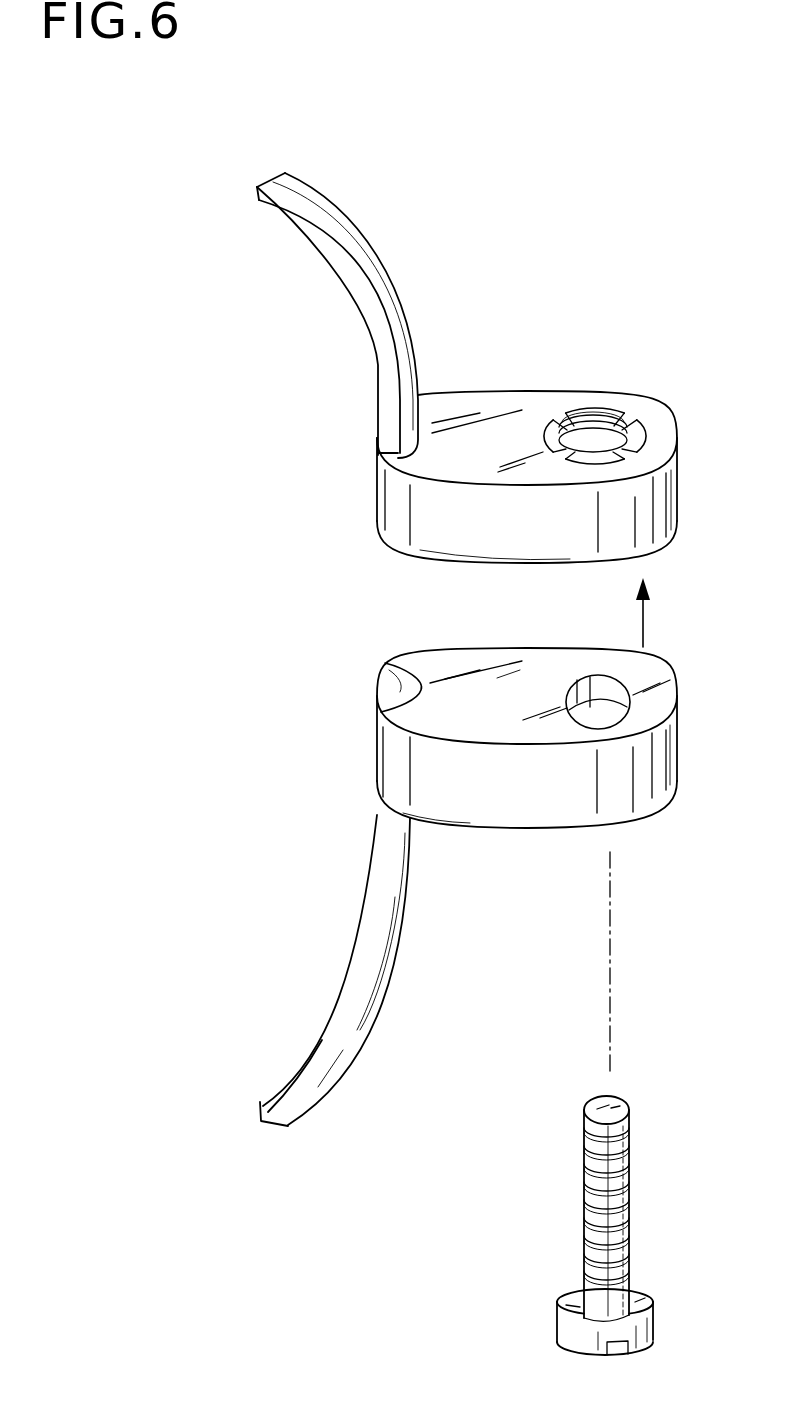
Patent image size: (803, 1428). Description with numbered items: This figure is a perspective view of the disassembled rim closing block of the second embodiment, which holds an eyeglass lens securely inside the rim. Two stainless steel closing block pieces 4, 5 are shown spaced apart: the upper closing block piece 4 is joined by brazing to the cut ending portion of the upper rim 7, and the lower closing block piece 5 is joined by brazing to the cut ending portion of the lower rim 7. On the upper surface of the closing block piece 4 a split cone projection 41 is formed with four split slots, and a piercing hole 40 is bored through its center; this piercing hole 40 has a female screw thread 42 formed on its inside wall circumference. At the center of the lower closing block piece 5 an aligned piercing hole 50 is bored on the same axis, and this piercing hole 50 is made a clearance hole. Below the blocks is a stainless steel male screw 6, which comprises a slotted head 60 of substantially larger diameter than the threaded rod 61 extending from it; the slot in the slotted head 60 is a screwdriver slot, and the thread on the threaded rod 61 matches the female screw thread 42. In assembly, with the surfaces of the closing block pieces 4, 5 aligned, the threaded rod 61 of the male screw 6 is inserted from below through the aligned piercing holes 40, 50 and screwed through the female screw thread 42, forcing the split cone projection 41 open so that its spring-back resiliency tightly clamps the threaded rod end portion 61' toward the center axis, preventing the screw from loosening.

The closing block piece 4 is at (532, 542).
The piercing hole 40 is at (587, 440).
The split cone projection 41 is at (580, 410).
The female screw thread 42 is at (604, 425).
The closing block piece 5 is at (650, 793).
The piercing hole 50 is at (612, 700).
The rim 7 is at (368, 945).
The male screw 6 is at (637, 1260).
The slotted head 60 is at (655, 1320).
The threaded rod 61 is at (643, 1207).
The threaded rod end portion 61' is at (642, 1082).